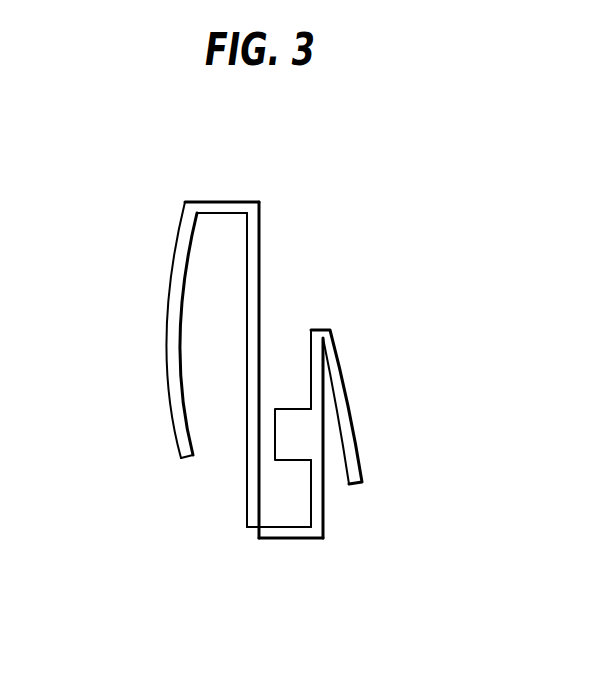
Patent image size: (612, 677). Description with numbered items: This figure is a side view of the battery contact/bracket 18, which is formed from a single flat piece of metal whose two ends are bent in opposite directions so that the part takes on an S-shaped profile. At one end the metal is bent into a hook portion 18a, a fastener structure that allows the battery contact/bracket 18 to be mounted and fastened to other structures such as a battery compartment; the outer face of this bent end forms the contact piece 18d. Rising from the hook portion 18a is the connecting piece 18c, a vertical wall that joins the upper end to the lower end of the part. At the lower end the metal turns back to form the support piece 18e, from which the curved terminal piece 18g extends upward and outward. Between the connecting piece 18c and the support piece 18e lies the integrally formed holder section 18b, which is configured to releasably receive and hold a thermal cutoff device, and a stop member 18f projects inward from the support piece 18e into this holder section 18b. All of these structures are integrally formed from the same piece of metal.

The battery contact/bracket 18 is at (222, 190).
The hook portion 18a is at (208, 278).
The holder section 18b is at (284, 380).
The connecting piece 18c is at (246, 472).
The contact piece 18d is at (170, 319).
The support piece 18e is at (330, 502).
The stop member 18f is at (292, 440).
The terminal piece 18g is at (353, 437).